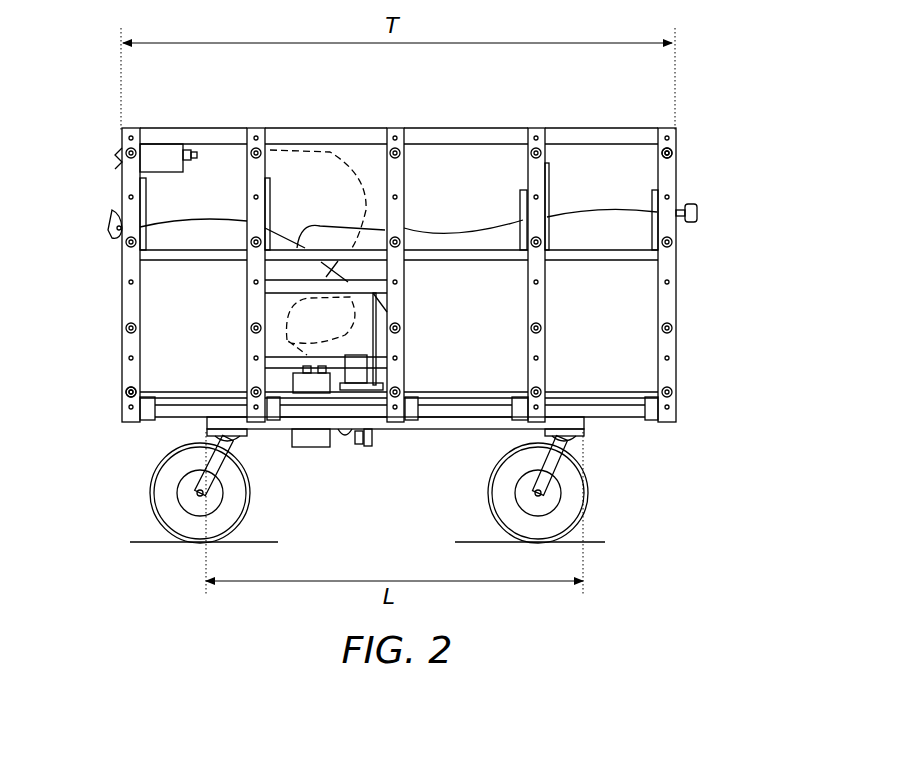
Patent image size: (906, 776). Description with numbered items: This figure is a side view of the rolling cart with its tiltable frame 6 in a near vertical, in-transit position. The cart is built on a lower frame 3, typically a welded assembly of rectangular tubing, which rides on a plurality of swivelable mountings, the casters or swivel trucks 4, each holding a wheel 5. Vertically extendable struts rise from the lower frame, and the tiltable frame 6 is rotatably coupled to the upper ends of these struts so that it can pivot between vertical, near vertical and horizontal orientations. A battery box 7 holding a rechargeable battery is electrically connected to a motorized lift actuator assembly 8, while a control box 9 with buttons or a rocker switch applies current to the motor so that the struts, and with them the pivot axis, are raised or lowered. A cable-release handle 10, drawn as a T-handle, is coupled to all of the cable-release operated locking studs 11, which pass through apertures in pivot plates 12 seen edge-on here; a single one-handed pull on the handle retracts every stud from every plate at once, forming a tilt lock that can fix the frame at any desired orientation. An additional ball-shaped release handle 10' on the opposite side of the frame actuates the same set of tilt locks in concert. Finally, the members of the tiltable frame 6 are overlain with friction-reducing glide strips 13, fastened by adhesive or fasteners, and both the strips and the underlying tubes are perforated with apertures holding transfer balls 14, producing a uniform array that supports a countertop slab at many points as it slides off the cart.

The lower frame 3 is at (450, 430).
The swivel trucks 4 is at (582, 440).
The wheels 5 is at (599, 493).
The tiltable frame 6 is at (456, 125).
The battery box 7 is at (302, 450).
The lift actuator assembly 8 is at (351, 446).
The control box 9 is at (118, 163).
The cable-release handle 10 is at (83, 242).
The additional release handle 10' is at (722, 229).
The locking studs 11 is at (237, 338).
The pivot plates 12 is at (238, 158).
The glide strips 13 is at (675, 175).
The transfer balls 14 is at (677, 150).